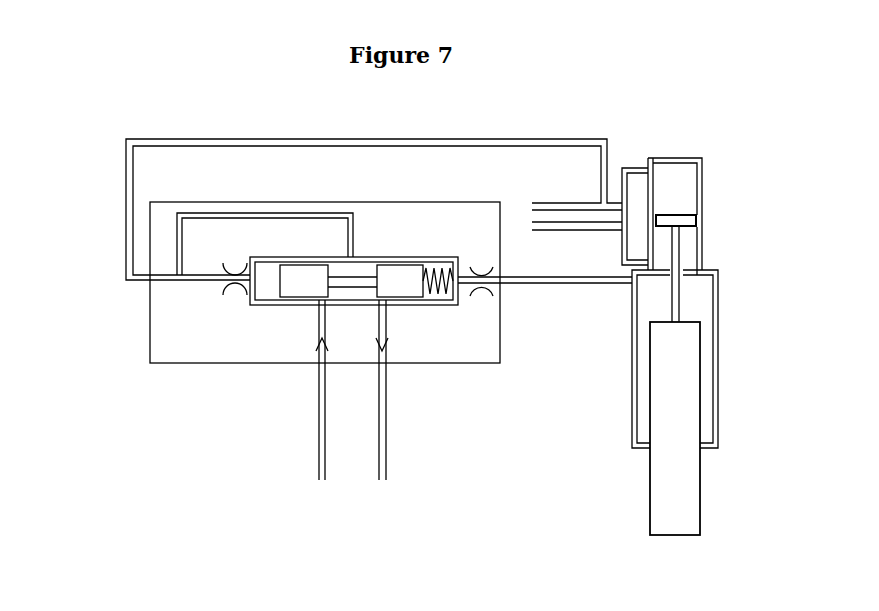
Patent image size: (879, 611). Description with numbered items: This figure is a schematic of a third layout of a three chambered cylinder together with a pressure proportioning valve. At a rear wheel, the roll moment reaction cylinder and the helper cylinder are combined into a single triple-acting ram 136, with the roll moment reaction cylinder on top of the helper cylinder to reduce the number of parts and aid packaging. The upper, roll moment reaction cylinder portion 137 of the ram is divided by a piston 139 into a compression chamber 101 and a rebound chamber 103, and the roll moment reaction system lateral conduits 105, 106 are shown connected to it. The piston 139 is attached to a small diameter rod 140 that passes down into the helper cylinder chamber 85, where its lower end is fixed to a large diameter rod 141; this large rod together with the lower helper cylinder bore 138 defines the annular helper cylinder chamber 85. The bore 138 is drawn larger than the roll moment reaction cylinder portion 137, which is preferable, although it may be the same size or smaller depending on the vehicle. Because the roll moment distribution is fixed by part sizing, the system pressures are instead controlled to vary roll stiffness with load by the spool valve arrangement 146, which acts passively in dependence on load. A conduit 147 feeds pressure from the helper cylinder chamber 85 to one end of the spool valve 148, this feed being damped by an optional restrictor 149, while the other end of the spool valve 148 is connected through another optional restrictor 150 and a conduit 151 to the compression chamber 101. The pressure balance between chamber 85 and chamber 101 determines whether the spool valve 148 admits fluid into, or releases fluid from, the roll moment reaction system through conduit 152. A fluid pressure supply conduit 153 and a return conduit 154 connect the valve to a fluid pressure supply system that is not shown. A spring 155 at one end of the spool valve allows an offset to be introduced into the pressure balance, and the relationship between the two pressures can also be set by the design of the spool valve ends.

The helper cylinder chamber 85 is at (694, 311).
The compression chamber 101 is at (682, 198).
The rebound chamber 103 is at (690, 253).
The lateral conduit 105 is at (634, 170).
The lateral conduit 106 is at (624, 238).
The triple-acting ram 136 is at (716, 128).
The roll moment reaction cylinder portion 137 is at (725, 197).
The helper cylinder bore 138 is at (717, 359).
The piston 139 is at (683, 222).
The small diameter rod 140 is at (678, 308).
The large diameter rod 141 is at (684, 415).
The spool valve arrangement 146 is at (228, 393).
The conduit 147 is at (557, 284).
The spool valve 148 is at (402, 292).
The restrictor 149 is at (484, 291).
The restrictor 150 is at (236, 292).
The conduit 151 is at (296, 146).
The conduit 152 is at (265, 215).
The fluid pressure supply conduit 153 is at (322, 450).
The return conduit 154 is at (386, 457).
The spring 155 is at (449, 303).